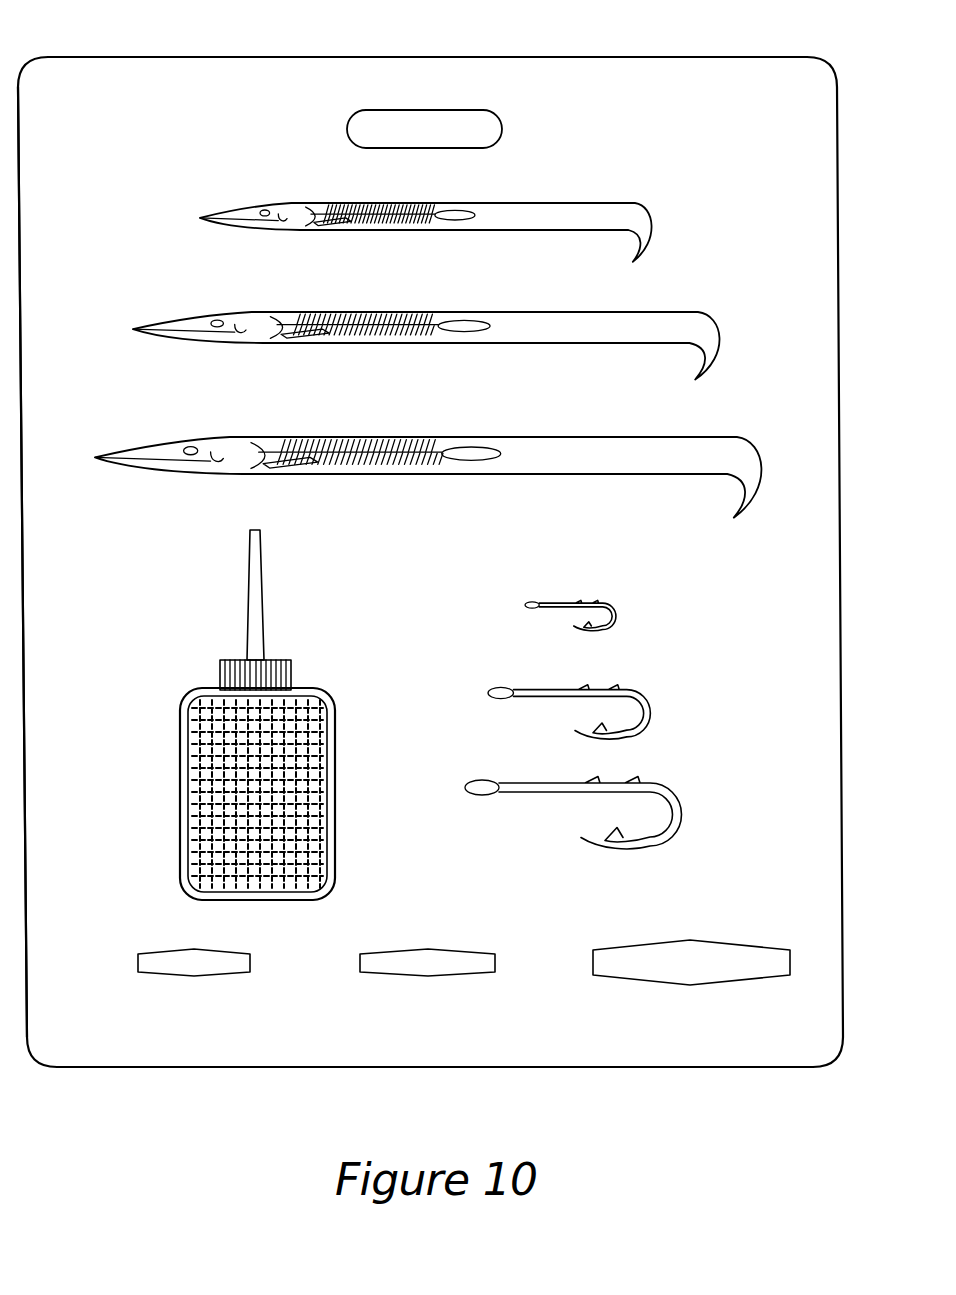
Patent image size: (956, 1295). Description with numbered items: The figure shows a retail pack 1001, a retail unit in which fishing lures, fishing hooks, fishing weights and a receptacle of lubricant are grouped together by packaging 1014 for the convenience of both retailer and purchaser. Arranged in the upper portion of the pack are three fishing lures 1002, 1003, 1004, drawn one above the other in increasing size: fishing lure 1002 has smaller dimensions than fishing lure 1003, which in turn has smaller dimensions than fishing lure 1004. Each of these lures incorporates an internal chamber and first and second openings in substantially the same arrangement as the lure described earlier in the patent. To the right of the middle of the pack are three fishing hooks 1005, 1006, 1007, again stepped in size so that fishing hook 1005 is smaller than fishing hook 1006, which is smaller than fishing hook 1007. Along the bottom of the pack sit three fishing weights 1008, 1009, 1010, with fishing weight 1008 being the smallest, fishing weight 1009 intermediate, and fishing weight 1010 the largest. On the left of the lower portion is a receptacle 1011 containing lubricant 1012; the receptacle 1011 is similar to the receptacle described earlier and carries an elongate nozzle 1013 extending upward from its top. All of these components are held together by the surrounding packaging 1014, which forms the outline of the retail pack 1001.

The retail pack 1001 is at (196, 1073).
The fishing lure 1002 is at (540, 224).
The fishing lure 1003 is at (540, 330).
The fishing lure 1004 is at (540, 462).
The fishing hook 1005 is at (622, 613).
The fishing hook 1006 is at (652, 718).
The fishing hook 1007 is at (672, 812).
The fishing weight 1008 is at (200, 963).
The fishing weight 1009 is at (438, 963).
The fishing weight 1010 is at (697, 962).
The receptacle 1011 is at (300, 693).
The lubricant 1012 is at (255, 783).
The elongate nozzle 1013 is at (253, 617).
The packaging 1014 is at (115, 103).